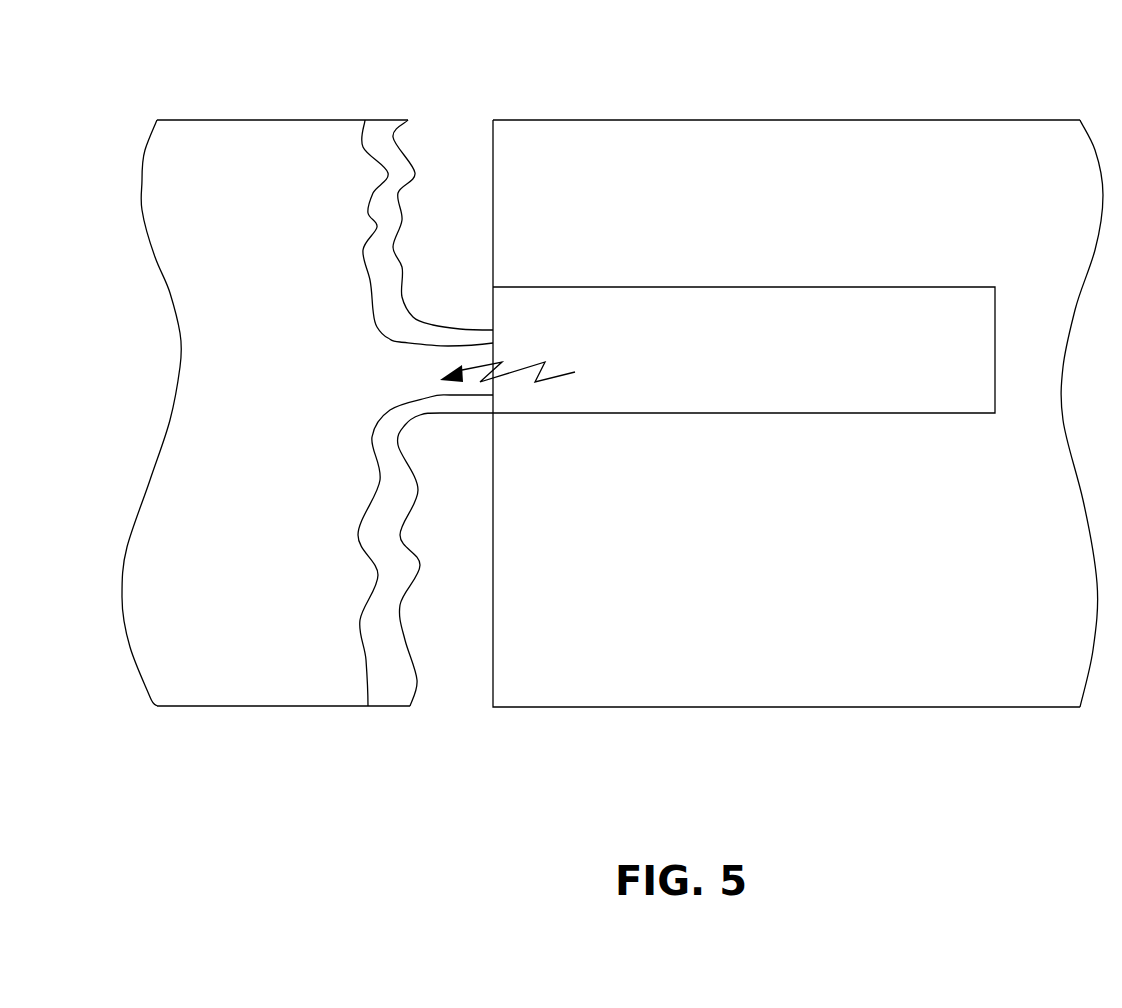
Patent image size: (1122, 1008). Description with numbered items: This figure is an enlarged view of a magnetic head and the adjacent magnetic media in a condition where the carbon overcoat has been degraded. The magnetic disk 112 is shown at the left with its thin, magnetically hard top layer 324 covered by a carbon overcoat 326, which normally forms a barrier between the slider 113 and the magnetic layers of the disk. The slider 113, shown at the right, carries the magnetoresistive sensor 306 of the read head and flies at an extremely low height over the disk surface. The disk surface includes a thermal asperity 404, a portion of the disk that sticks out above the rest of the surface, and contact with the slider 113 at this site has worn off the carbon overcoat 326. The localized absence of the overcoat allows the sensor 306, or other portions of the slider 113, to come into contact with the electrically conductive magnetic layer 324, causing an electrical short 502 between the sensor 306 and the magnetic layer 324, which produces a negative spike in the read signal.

The magnetic disk 112 is at (312, 108).
The slider 113 is at (687, 108).
The magnetoresistive sensor 306 is at (796, 341).
The magnetic top layer 324 is at (302, 690).
The carbon overcoat 326 is at (388, 685).
The thermal asperity 404 is at (450, 362).
The electrical short 502 is at (523, 363).